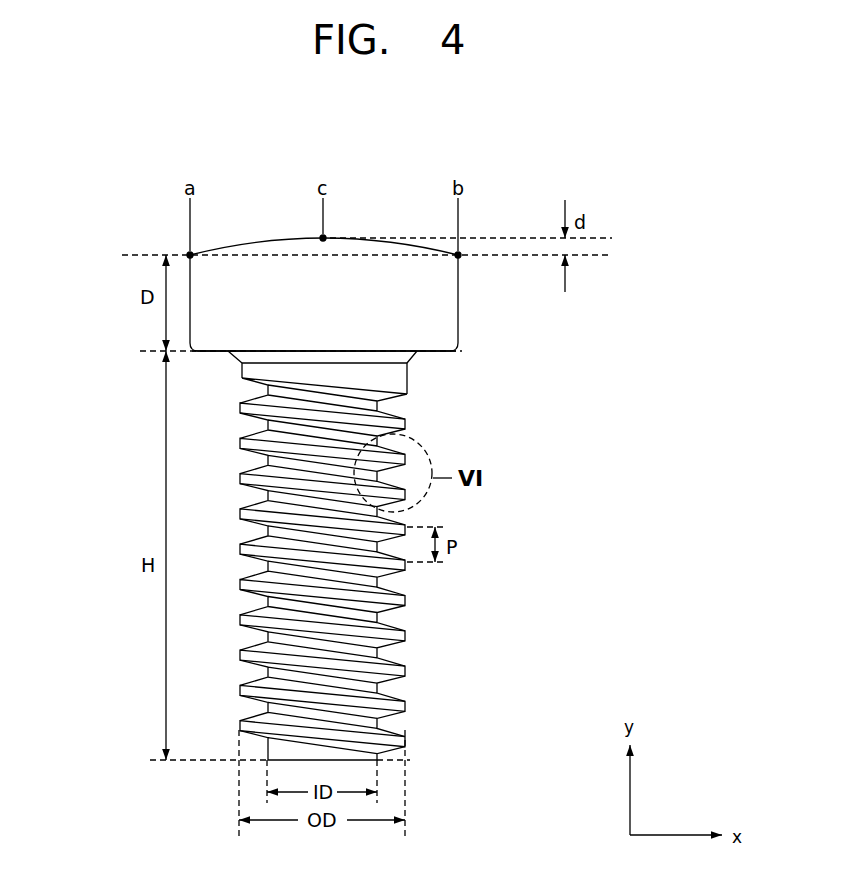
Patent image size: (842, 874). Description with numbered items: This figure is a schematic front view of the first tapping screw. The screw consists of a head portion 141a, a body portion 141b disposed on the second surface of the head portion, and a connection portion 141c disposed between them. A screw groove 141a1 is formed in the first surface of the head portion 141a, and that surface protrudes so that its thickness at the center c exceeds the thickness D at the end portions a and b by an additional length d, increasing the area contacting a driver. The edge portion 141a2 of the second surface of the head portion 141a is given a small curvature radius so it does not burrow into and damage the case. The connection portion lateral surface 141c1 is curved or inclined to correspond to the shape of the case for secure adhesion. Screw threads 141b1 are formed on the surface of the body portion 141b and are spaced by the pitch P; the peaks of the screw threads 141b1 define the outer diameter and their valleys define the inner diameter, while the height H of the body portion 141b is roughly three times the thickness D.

The head portion 141a is at (307, 257).
The screw groove 141a1 is at (327, 237).
The edge portion 141a2 is at (455, 348).
The body portion 141b is at (293, 569).
The screw threads 141b1 is at (407, 670).
The connection portion 141c is at (306, 387).
The connection portion lateral surface 141c1 is at (413, 358).